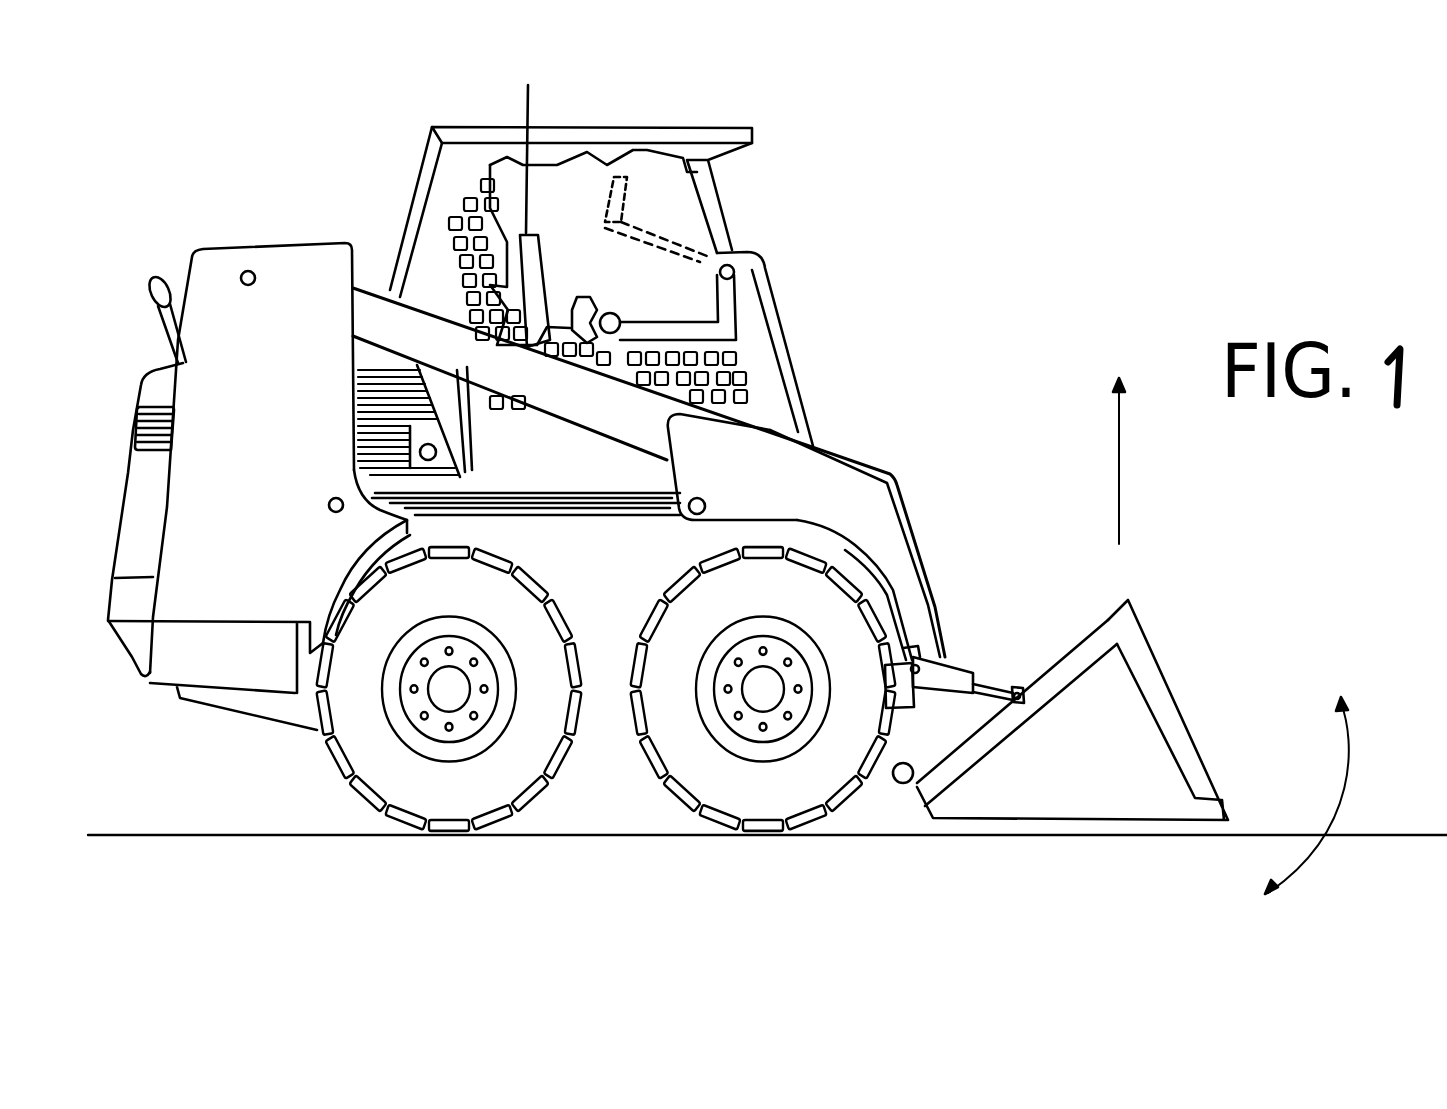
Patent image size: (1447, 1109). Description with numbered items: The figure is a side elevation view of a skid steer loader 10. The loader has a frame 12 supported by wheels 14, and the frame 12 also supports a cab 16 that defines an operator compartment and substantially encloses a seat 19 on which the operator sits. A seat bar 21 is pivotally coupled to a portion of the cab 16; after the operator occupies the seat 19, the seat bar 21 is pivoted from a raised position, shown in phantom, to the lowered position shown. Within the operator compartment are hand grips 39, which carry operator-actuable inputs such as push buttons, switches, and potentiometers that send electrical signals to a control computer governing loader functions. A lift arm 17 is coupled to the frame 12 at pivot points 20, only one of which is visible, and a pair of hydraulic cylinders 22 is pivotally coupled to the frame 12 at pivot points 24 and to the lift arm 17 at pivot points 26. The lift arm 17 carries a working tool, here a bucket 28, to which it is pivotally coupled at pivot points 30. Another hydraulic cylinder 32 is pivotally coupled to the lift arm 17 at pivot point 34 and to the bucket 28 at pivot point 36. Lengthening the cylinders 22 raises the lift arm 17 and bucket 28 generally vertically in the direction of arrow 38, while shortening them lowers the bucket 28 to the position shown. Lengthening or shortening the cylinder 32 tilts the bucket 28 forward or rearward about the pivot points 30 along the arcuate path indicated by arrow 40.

The skid steer loader 10 is at (800, 240).
The frame 12 is at (172, 660).
The wheels 14 is at (470, 840).
The cab 16 is at (644, 137).
The lift arm 17 is at (925, 540).
The seat 19 is at (528, 199).
The pivot points 20 is at (248, 271).
The seat bar 21 is at (740, 300).
The hydraulic cylinders 22 is at (632, 493).
The pivot points 24 is at (335, 512).
The pivot points 26 is at (697, 506).
The bucket 28 is at (1161, 701).
The pivot points 30 is at (900, 787).
The hydraulic cylinder 32 is at (960, 670).
The pivot point 34 is at (945, 660).
The pivot point 36 is at (1033, 673).
The arrow 38 is at (1120, 463).
The hand grips 39 is at (590, 297).
The arrow 40 is at (1345, 777).